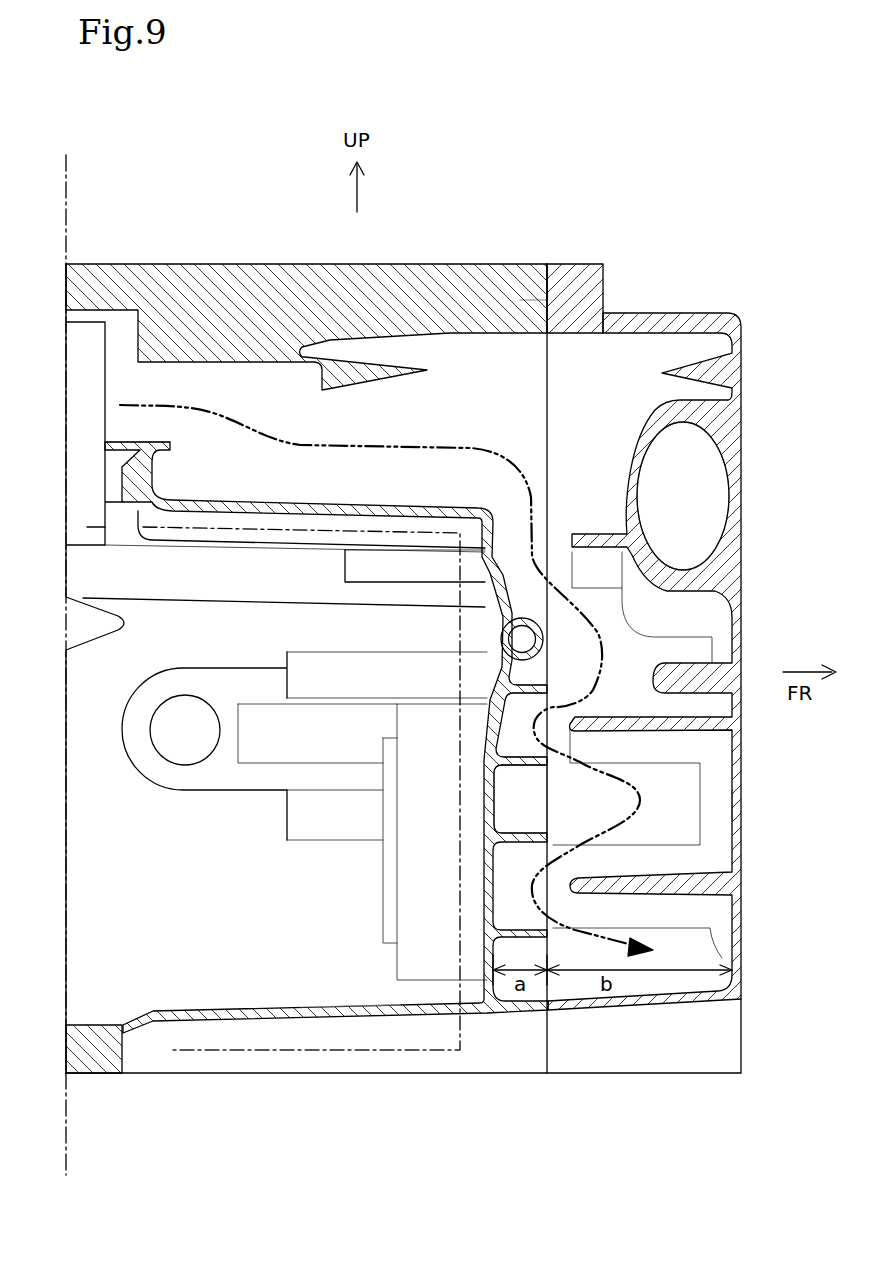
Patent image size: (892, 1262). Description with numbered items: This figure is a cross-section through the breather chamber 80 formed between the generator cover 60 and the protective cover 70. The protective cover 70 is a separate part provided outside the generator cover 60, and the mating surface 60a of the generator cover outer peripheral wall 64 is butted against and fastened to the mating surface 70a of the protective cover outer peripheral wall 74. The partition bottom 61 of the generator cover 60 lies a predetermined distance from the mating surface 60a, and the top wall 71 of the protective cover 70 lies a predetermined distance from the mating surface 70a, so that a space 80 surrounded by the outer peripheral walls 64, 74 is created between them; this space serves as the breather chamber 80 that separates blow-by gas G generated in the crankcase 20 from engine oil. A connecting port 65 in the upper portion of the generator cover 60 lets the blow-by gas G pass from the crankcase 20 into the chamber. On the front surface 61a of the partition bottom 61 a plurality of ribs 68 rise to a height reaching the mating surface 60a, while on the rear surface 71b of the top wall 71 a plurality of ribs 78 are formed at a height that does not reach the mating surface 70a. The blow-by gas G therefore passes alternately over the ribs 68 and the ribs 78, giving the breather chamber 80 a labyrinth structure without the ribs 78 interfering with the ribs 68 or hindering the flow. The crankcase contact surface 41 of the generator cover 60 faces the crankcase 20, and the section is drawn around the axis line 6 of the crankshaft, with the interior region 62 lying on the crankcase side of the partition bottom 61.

The axis line 6 is at (460, 1035).
The crankcase 20 is at (68, 192).
The crankcase contact surface 41 is at (53, 283).
The generator cover 60 is at (437, 258).
The mating surface 60a is at (548, 300).
The partition bottom 61 is at (478, 824).
The front surface 61a is at (527, 810).
The interior mechanism 62 is at (230, 857).
The outer peripheral wall 64 is at (525, 1010).
The connecting port 65 is at (123, 370).
The ribs 68 is at (522, 693).
The protective cover 70 is at (585, 258).
The mating surface 70a is at (545, 300).
The top wall 71 is at (753, 754).
The rear surface 71b is at (733, 805).
The outer peripheral wall 74 is at (605, 1000).
The ribs 78 is at (592, 542).
The breather chamber 80 is at (645, 700).
The blow-by gas G is at (558, 500).